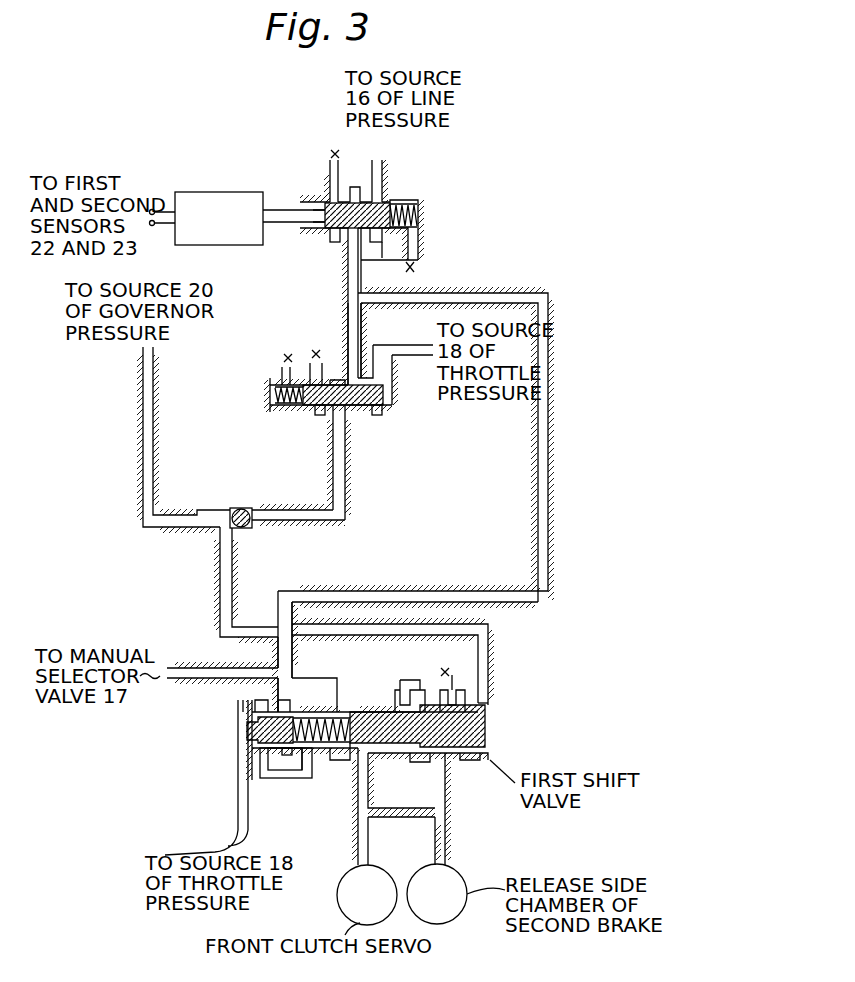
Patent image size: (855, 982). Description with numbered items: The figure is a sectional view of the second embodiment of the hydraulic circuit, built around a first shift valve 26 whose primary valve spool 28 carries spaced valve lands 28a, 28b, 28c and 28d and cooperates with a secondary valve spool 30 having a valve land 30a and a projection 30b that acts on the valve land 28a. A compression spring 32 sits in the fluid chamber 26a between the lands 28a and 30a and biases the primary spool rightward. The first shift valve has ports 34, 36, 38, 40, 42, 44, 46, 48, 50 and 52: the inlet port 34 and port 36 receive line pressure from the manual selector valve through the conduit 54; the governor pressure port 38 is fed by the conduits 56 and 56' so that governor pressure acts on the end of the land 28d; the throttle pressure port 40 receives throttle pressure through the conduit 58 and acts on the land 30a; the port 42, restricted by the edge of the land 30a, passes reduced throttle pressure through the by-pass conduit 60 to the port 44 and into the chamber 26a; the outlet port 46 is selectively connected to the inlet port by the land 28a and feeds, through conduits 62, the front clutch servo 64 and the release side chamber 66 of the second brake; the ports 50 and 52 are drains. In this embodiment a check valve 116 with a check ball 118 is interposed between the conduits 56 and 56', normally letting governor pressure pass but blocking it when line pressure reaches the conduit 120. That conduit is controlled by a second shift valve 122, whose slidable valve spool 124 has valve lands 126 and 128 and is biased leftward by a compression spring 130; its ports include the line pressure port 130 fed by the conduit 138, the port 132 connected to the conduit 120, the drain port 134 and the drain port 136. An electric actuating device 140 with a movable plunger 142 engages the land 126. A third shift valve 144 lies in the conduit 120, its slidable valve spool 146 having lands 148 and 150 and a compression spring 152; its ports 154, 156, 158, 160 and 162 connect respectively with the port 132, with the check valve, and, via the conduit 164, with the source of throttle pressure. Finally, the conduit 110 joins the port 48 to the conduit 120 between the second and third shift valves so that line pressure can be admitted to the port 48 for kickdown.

The first shift valve 26 is at (510, 701).
The fluid chamber 26a is at (340, 762).
The primary valve spool 28 is at (490, 719).
The valve land 28a is at (356, 800).
The valve land 28b is at (418, 756).
The valve land 28c is at (470, 760).
The valve land 28d is at (490, 735).
The secondary valve spool 30 is at (244, 735).
The valve land 30a is at (250, 718).
The projection 30b is at (265, 710).
The compression spring 32 is at (272, 760).
The inlet port 34 is at (325, 705).
The port 36 is at (442, 688).
The governor pressure port 38 is at (488, 695).
The throttle pressure port 40 is at (246, 752).
The port 42 is at (246, 795).
The port 44 is at (298, 762).
The outlet port 46 is at (392, 762).
The port 48 is at (300, 716).
The drain port 50 is at (405, 700).
The drain port 52 is at (475, 655).
The conduit 54 is at (200, 665).
The conduit 56 is at (246, 585).
The conduit 56' is at (183, 440).
The conduit 58 is at (238, 778).
The by-pass conduit 60 is at (312, 778).
The conduits 62 is at (370, 847).
The front clutch servo 64 is at (353, 907).
The release side chamber 66 is at (423, 906).
The conduit 110 is at (358, 592).
The check valve 116 is at (222, 509).
The check ball 118 is at (247, 510).
The conduit 120 is at (342, 287).
The second shift valve 122 is at (403, 190).
The valve spool 124 is at (333, 238).
The valve land 126 is at (318, 232).
The valve land 128 is at (368, 240).
The compression spring 130 is at (358, 200).
The port 132 is at (382, 262).
The drain port 134 is at (330, 180).
The drain port 136 is at (420, 240).
The conduit 138 is at (380, 165).
The electric actuating device 140 is at (228, 200).
The movable plunger 142 is at (290, 212).
The third shift valve 144 is at (371, 425).
The valve spool 146 is at (350, 414).
The valve land 148 is at (320, 412).
The valve land 150 is at (382, 412).
The compression spring 152 is at (286, 407).
The port 154 is at (358, 365).
The port 156 is at (335, 436).
The port 158 is at (385, 376).
The port 160 is at (315, 378).
The port 162 is at (273, 383).
The conduit 164 is at (380, 340).